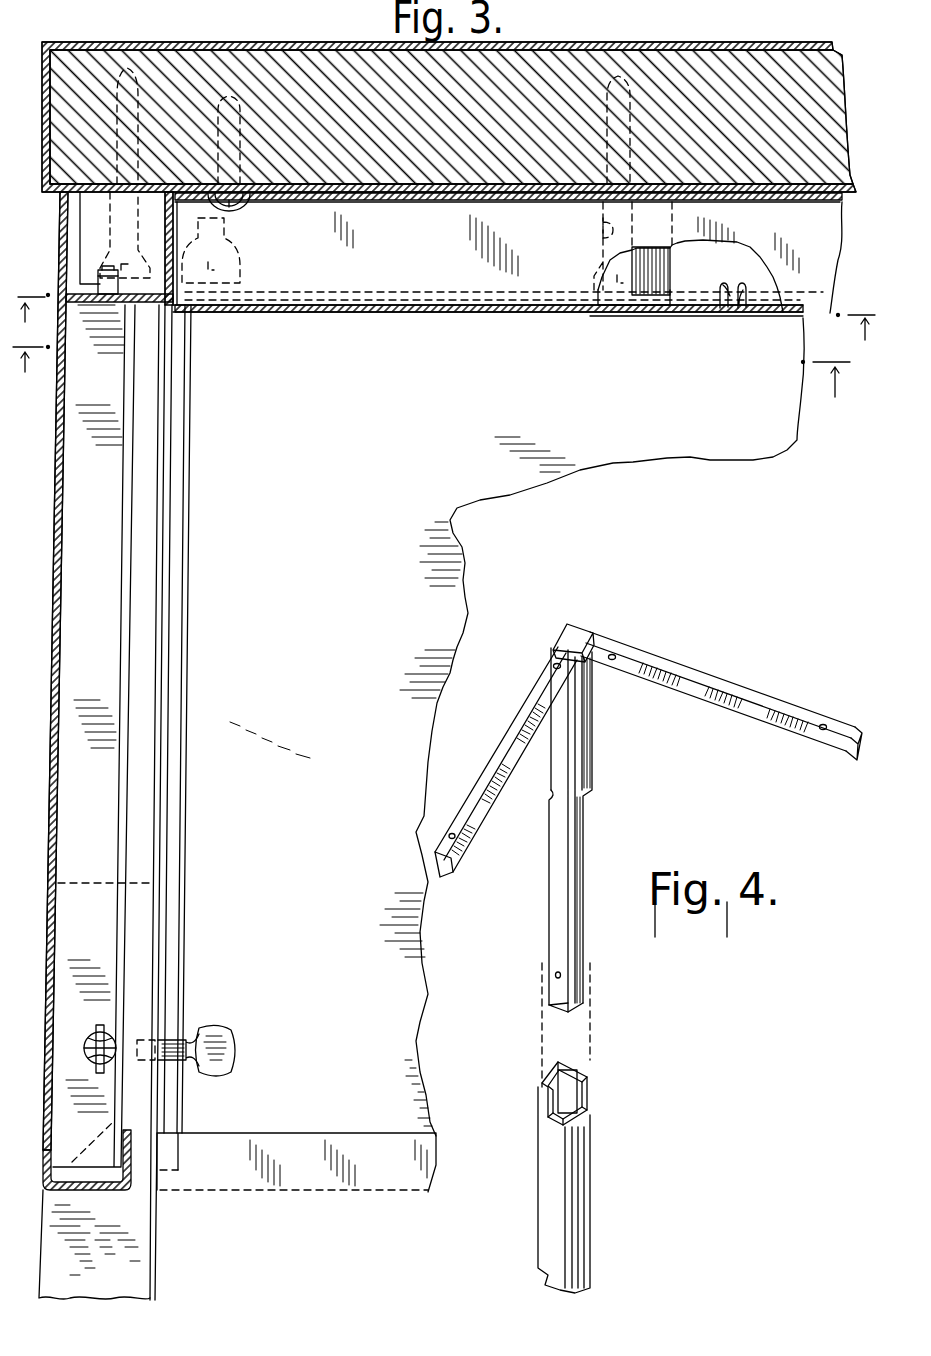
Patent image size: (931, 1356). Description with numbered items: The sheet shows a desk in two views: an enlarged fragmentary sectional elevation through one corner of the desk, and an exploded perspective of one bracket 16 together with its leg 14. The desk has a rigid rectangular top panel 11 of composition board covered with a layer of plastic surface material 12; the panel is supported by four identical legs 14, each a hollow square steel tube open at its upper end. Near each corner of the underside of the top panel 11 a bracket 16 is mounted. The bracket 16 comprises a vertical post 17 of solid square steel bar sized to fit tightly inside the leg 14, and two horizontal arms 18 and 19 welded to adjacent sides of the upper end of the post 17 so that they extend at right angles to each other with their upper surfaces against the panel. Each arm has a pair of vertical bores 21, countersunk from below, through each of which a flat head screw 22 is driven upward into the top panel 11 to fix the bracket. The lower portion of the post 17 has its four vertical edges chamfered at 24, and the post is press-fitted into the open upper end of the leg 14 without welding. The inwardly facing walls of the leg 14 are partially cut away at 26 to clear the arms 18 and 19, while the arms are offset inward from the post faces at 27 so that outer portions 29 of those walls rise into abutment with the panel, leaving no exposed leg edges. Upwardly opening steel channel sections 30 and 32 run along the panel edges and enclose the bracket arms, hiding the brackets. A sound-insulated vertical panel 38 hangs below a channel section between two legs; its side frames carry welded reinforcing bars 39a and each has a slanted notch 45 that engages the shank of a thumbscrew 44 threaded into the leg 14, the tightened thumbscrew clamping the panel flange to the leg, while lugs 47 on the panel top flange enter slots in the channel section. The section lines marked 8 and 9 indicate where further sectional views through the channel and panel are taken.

In FIG. 3, the top panel 11 is at (207, 62).
In FIG. 3, the plastic surface material 12 is at (277, 50).
In FIG. 3, the leg 14 is at (120, 1270).
In FIG. 4, the leg 14 is at (577, 1213).
In FIG. 4, the bracket 16 is at (666, 654).
In FIG. 3, the vertical post 17 is at (165, 628).
In FIG. 4, the vertical post 17 is at (587, 750).
In FIG. 3, the horizontal arm 18 is at (90, 232).
In FIG. 4, the horizontal arm 18 is at (523, 710).
In FIG. 3, the horizontal arm 19 is at (415, 306).
In FIG. 4, the horizontal arm 19 is at (775, 705).
In FIG. 3, the bores 21 is at (602, 218).
In FIG. 4, the bores 21 is at (554, 666).
In FIG. 3, the flat head screw 22 is at (110, 128).
In FIG. 4, the chamfer 24 is at (570, 882).
In FIG. 4, the cut away portion 26 is at (580, 1115).
In FIG. 4, the offset 27 is at (558, 636).
In FIG. 4, the outer portions 29 is at (547, 1102).
In FIG. 3, the channel section 30 is at (818, 252).
In FIG. 3, the channel section 32 is at (67, 255).
In FIG. 3, the vertical panel 38 is at (633, 447).
In FIG. 3, the reinforcing bar 39a is at (182, 921).
In FIG. 3, the thumbscrew 44 is at (217, 1033).
In FIG. 3, the notch 45 is at (90, 1047).
In FIG. 3, the lug 47 is at (103, 283).
In FIG. 3, the section line 8 is at (446, 318).
In FIG. 3, the section line 9 is at (431, 373).